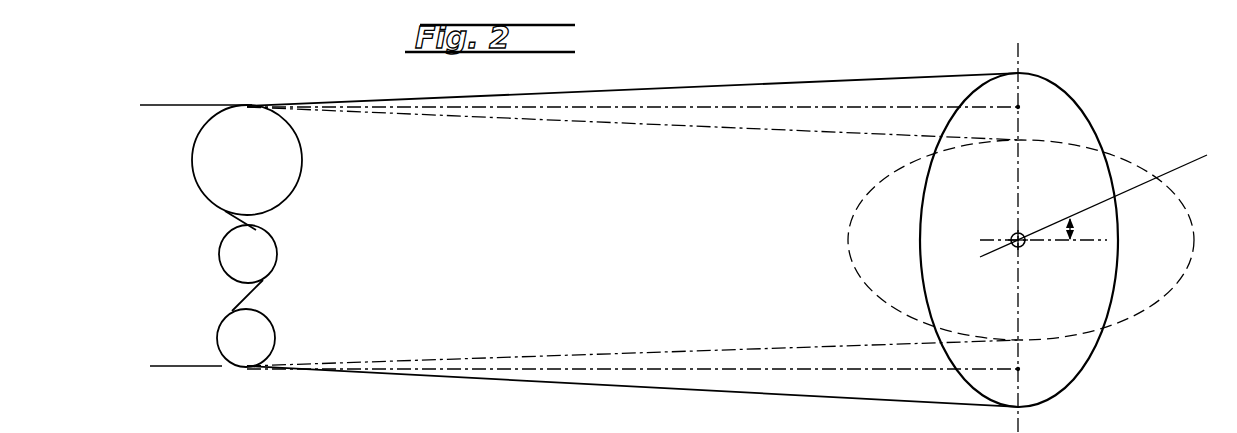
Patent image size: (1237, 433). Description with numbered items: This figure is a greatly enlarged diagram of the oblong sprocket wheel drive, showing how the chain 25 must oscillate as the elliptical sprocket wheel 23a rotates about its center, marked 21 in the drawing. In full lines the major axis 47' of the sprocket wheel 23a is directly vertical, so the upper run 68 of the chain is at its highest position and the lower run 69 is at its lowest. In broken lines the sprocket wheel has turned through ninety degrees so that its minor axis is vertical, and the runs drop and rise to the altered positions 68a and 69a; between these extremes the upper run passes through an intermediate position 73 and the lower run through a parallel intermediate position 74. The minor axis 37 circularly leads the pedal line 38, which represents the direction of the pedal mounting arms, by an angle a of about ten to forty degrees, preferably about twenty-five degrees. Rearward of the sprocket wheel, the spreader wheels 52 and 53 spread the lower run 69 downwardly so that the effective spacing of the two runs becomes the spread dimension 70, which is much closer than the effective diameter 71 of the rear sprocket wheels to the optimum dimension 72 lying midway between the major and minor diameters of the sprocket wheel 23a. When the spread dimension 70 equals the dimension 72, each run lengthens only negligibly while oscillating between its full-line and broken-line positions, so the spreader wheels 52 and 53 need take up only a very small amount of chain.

The pulley shaft center 21 is at (1022, 248).
The oblong sprocket wheel 23a is at (1098, 138).
The chain 25 is at (481, 92).
The minor axis 37 is at (1087, 241).
The pedal line 38 is at (1198, 163).
The major axis 47' is at (1043, 238).
The spreader wheel 52 is at (268, 248).
The spreader wheel 53 is at (268, 334).
The upper run 68 is at (660, 89).
The altered position of upper run 68a is at (725, 125).
The lower run 69 is at (725, 392).
The altered position of lower run 69a is at (670, 352).
The spread dimension 70 is at (167, 365).
The effective diameter 71 is at (247, 107).
The optimum dimension 72 is at (818, 368).
The intermediate position of upper run 73 is at (697, 107).
The intermediate position of lower run 74 is at (777, 370).
The angle a is at (1078, 229).